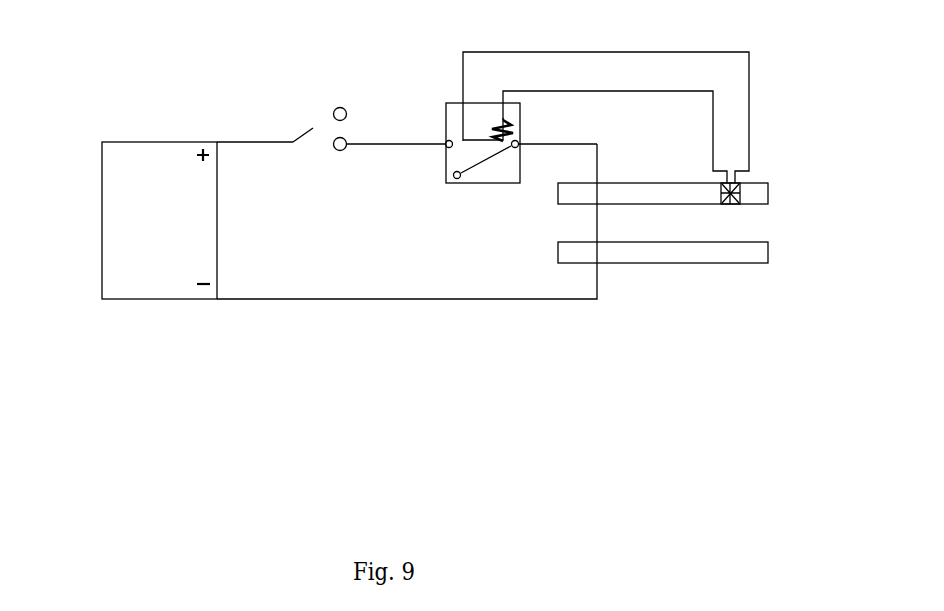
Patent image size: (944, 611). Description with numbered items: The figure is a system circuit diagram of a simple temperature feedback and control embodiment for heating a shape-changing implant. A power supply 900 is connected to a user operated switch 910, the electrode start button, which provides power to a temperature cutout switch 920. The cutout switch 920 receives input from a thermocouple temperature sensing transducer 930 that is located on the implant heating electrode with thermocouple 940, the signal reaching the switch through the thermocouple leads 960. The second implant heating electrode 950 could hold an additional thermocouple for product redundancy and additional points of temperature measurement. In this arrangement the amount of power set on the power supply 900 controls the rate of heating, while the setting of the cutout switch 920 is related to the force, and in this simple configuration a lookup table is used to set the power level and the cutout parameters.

The power supply 900 is at (133, 269).
The user operated switch 910 is at (313, 130).
The temperature cutout switch 920 is at (446, 103).
The thermocouple temperature sensing transducer 930 is at (742, 195).
The implant heating electrode with thermocouple 940 is at (683, 205).
The implant heating electrode 950 is at (683, 263).
The thermocouple leads to temperature cutout switch 960 is at (713, 153).